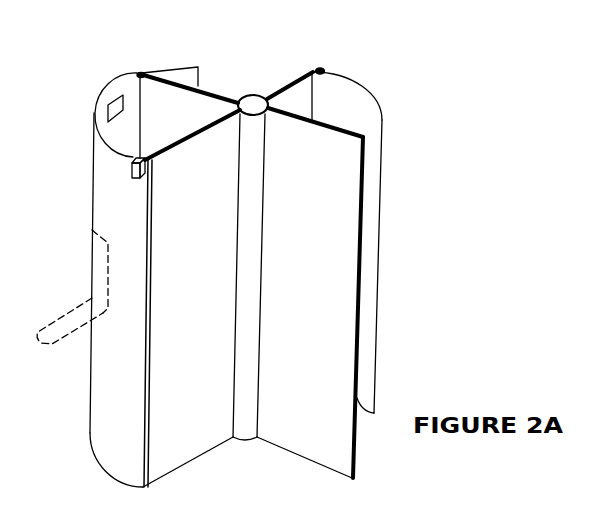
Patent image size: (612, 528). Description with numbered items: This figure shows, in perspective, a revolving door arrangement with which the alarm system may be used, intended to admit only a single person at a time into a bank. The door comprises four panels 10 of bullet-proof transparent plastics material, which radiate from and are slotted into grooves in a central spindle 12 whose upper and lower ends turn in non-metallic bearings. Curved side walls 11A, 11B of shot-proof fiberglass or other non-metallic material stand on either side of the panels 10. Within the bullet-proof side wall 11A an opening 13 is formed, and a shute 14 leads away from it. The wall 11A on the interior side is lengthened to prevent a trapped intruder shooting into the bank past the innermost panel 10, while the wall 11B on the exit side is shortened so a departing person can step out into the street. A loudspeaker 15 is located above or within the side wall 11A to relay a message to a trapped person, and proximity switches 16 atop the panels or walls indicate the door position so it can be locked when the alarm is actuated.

The panels 10 is at (213, 103).
The side wall 11A is at (104, 158).
The side wall 11B is at (362, 115).
The spindle 12 is at (247, 422).
The opening 13 is at (100, 258).
The shute 14 is at (67, 317).
The loudspeaker 15 is at (117, 95).
The proximity switches 16 is at (139, 70).